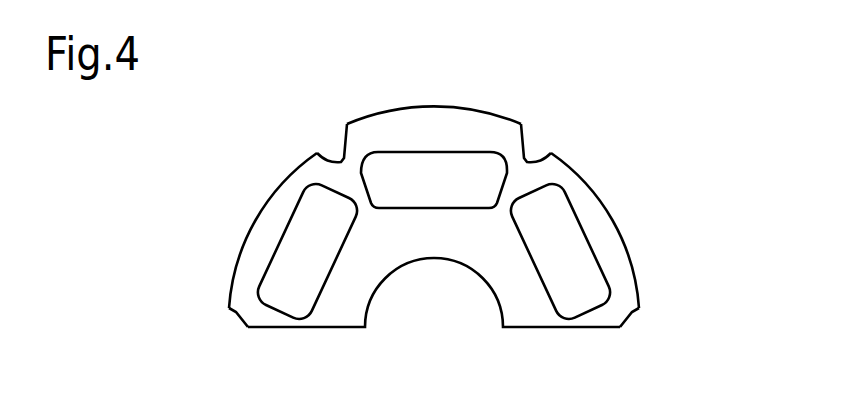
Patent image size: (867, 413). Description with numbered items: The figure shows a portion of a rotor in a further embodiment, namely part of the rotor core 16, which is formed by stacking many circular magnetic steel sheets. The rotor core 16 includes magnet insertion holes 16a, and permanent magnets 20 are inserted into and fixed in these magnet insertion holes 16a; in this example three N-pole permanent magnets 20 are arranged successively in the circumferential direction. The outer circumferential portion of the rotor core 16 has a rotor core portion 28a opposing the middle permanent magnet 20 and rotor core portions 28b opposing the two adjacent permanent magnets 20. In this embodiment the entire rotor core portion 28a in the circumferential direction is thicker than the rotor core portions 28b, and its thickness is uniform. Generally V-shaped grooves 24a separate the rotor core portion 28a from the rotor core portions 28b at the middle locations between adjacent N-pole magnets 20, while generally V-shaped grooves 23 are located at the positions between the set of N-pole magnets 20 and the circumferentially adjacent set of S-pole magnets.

The rotor core 16 is at (435, 200).
The magnet insertion holes 16a is at (309, 286).
The permanent magnets 20 is at (390, 198).
The generally V-shaped grooves 23 is at (236, 318).
The generally V-shaped groove 24a is at (329, 160).
The rotor core portion 28a is at (431, 116).
The rotor core portions 28b is at (263, 218).